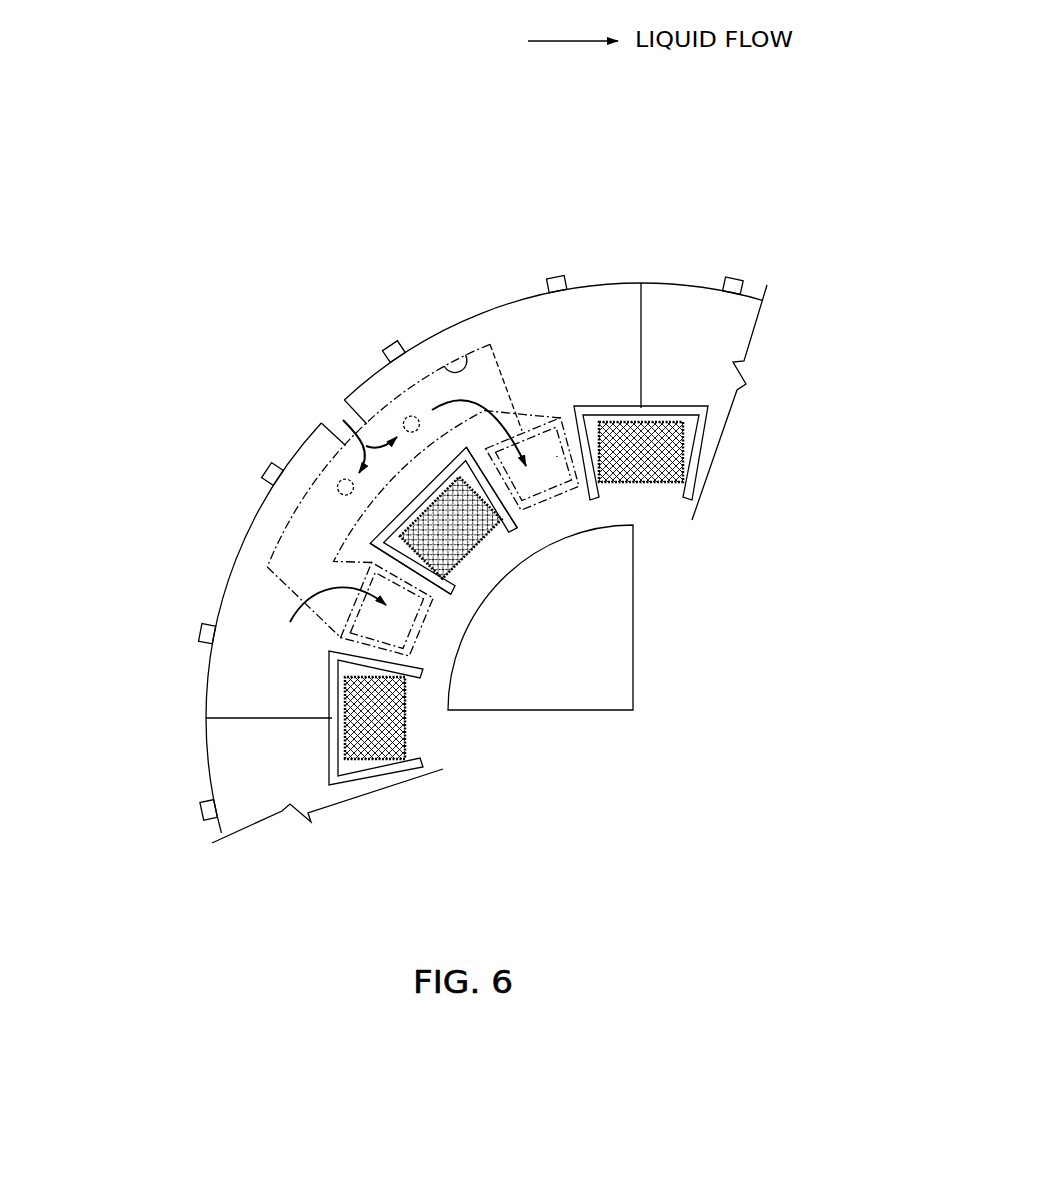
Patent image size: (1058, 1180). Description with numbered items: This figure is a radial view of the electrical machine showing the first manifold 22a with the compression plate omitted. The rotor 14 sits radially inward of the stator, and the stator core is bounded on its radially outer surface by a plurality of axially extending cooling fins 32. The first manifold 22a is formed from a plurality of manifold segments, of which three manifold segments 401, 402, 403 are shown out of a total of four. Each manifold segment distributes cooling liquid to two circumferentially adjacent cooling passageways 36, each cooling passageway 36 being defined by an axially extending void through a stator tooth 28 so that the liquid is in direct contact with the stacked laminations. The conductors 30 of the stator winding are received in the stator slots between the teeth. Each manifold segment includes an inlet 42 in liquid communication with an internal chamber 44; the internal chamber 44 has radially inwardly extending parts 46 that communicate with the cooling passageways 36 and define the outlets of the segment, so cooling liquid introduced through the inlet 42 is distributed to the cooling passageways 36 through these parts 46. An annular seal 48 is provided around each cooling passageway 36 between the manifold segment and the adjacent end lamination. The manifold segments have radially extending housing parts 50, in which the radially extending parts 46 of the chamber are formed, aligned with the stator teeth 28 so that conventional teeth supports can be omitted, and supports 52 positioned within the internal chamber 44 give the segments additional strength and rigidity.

The rotor 14 is at (667, 633).
The first manifold 22a is at (397, 226).
The stator tooth 28 is at (430, 647).
The conductor 30 is at (635, 468).
The cooling fin 32 is at (552, 274).
The cooling passageway 36 is at (557, 457).
The manifold segment 401 is at (230, 763).
The manifold segment 402 is at (240, 690).
The manifold segment 403 is at (677, 313).
The inlet 42 is at (322, 403).
The internal chamber 44 is at (448, 374).
The radially inwardly extending part 46 is at (513, 390).
The annular seal 48 is at (343, 638).
The radially extending part 50 is at (403, 553).
The support 52 is at (410, 416).